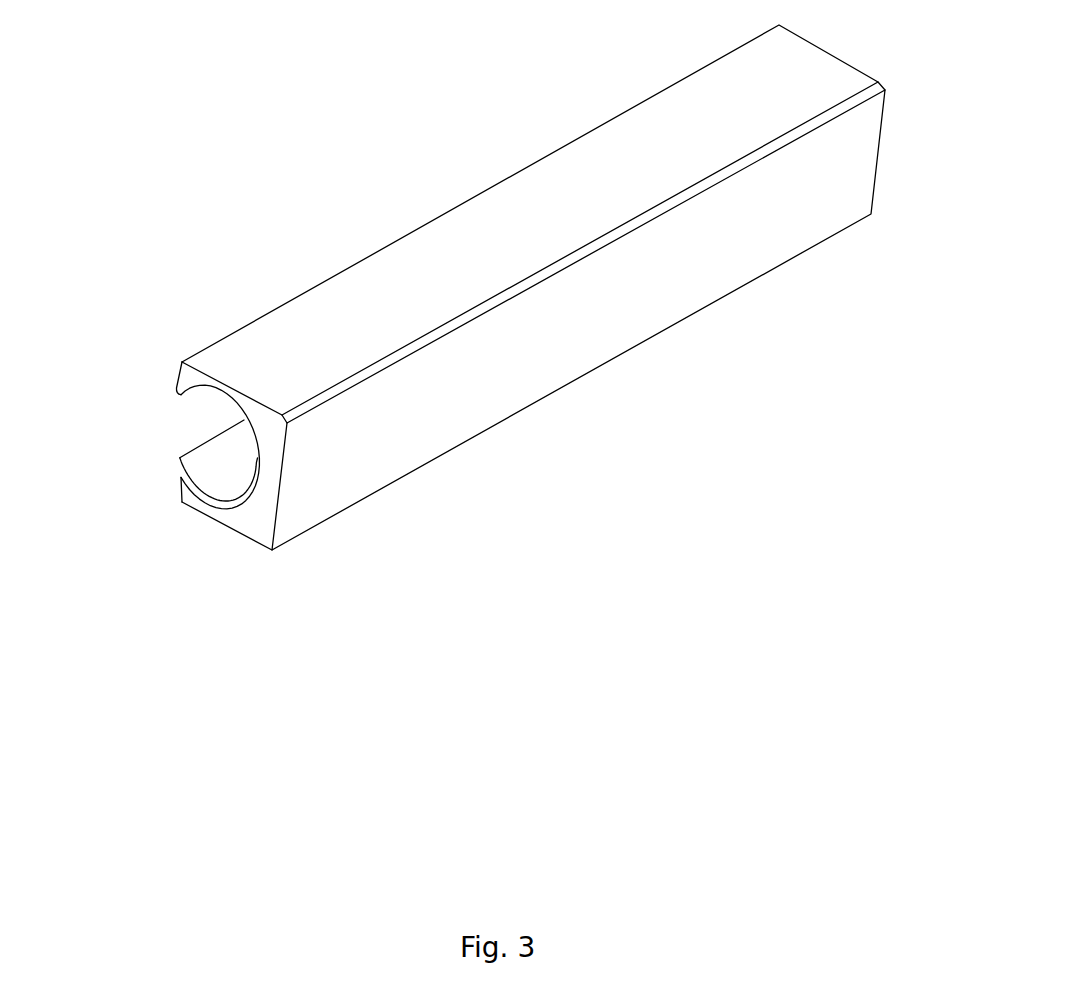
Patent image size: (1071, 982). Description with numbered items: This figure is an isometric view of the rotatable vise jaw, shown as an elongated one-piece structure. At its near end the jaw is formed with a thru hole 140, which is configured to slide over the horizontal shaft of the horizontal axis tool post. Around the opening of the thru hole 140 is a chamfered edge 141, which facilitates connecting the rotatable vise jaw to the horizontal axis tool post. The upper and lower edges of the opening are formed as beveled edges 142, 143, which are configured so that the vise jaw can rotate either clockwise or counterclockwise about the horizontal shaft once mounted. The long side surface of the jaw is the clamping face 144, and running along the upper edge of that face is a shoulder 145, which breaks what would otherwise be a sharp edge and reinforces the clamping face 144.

The thru hole 140 is at (208, 467).
The chamfered edge 141 is at (220, 507).
The beveled edge 142 is at (179, 372).
The beveled edge 143 is at (180, 476).
The clamping face 144 is at (740, 227).
The shoulder 145 is at (850, 102).